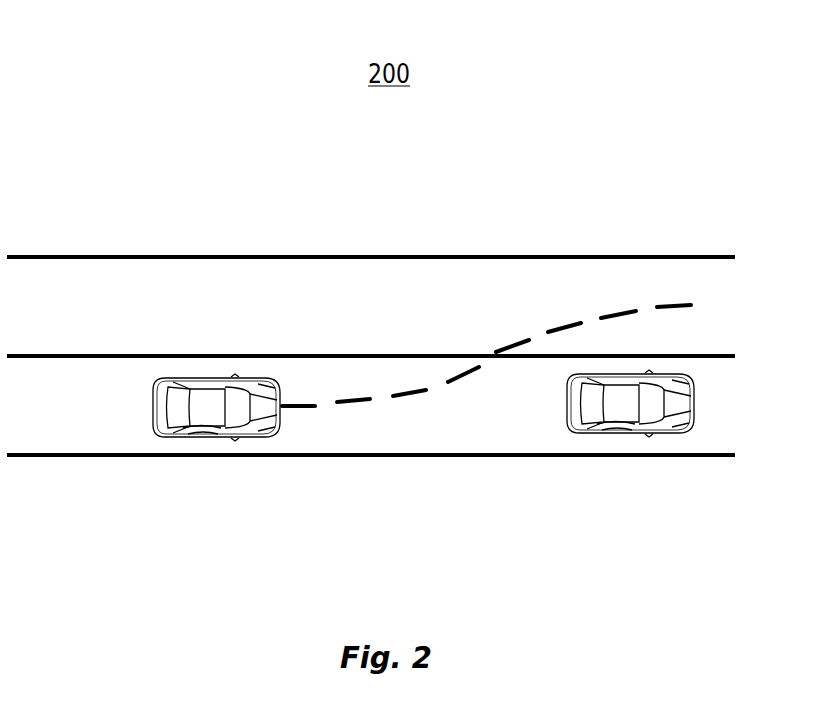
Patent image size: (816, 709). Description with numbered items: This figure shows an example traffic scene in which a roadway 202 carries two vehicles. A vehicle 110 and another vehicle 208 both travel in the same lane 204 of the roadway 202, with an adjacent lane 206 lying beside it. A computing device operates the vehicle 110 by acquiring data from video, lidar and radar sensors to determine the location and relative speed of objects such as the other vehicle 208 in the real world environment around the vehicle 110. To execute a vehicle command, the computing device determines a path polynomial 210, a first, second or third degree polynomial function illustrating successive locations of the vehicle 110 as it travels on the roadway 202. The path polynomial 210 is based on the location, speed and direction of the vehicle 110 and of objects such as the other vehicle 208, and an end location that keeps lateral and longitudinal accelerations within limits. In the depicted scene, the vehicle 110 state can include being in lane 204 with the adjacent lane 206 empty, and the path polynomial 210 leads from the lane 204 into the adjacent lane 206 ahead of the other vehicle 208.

The roadway 202 is at (185, 220).
The lane 204 is at (60, 418).
The adjacent lane 206 is at (60, 318).
The vehicle 110 is at (210, 428).
The another vehicle 208 is at (625, 423).
The path polynomial 210 is at (474, 368).